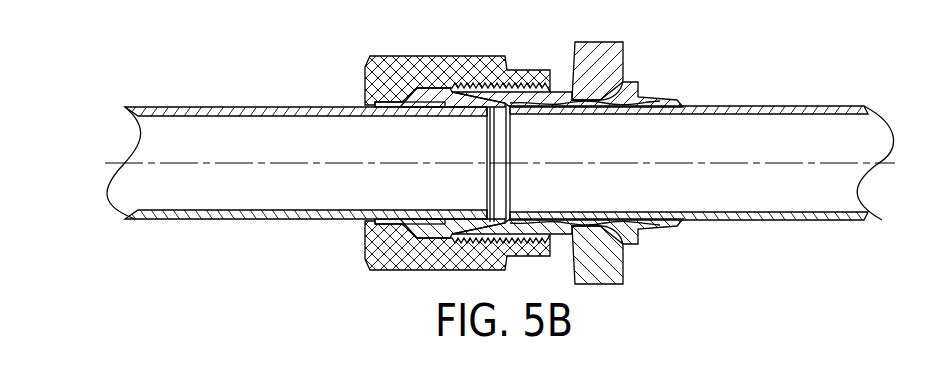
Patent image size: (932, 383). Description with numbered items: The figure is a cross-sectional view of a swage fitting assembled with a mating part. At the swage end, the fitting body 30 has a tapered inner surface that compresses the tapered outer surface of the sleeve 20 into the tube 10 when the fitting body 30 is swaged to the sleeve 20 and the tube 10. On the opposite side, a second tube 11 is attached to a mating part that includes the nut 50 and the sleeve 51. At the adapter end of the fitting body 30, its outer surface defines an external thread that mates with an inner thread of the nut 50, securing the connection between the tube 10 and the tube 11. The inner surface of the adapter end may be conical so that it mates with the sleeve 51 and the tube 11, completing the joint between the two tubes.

The tube 10 is at (817, 105).
The tube 11 is at (233, 102).
The sleeve 20 is at (644, 89).
The fitting body 30 is at (623, 37).
The nut 50 is at (407, 47).
The sleeve 51 is at (403, 95).